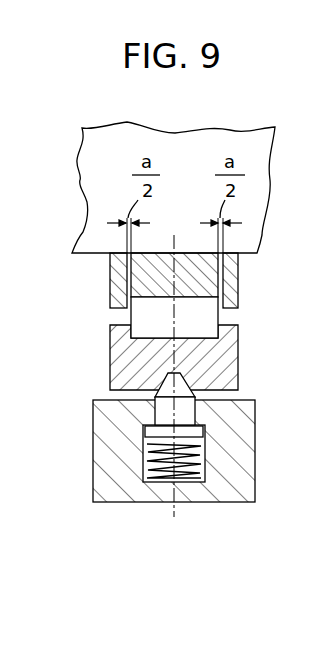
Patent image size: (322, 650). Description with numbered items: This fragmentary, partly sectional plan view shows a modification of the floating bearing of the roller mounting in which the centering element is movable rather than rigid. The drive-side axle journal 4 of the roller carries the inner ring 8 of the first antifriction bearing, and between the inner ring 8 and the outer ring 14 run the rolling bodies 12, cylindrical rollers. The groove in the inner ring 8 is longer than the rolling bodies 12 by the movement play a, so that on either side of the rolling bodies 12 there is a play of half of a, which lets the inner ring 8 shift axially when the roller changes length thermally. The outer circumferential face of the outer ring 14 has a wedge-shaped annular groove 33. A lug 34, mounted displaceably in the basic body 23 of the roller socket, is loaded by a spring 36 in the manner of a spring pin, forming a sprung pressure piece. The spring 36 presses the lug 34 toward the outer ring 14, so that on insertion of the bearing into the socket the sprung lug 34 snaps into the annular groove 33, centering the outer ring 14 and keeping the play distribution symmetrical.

The axle journal 4 is at (97, 182).
The inner ring 8 is at (125, 276).
The rolling bodies 12 is at (150, 320).
The outer ring 14 is at (128, 362).
The basic body 23 is at (126, 444).
The annular groove 33 is at (233, 384).
The lug 34 is at (182, 394).
The spring 36 is at (163, 468).